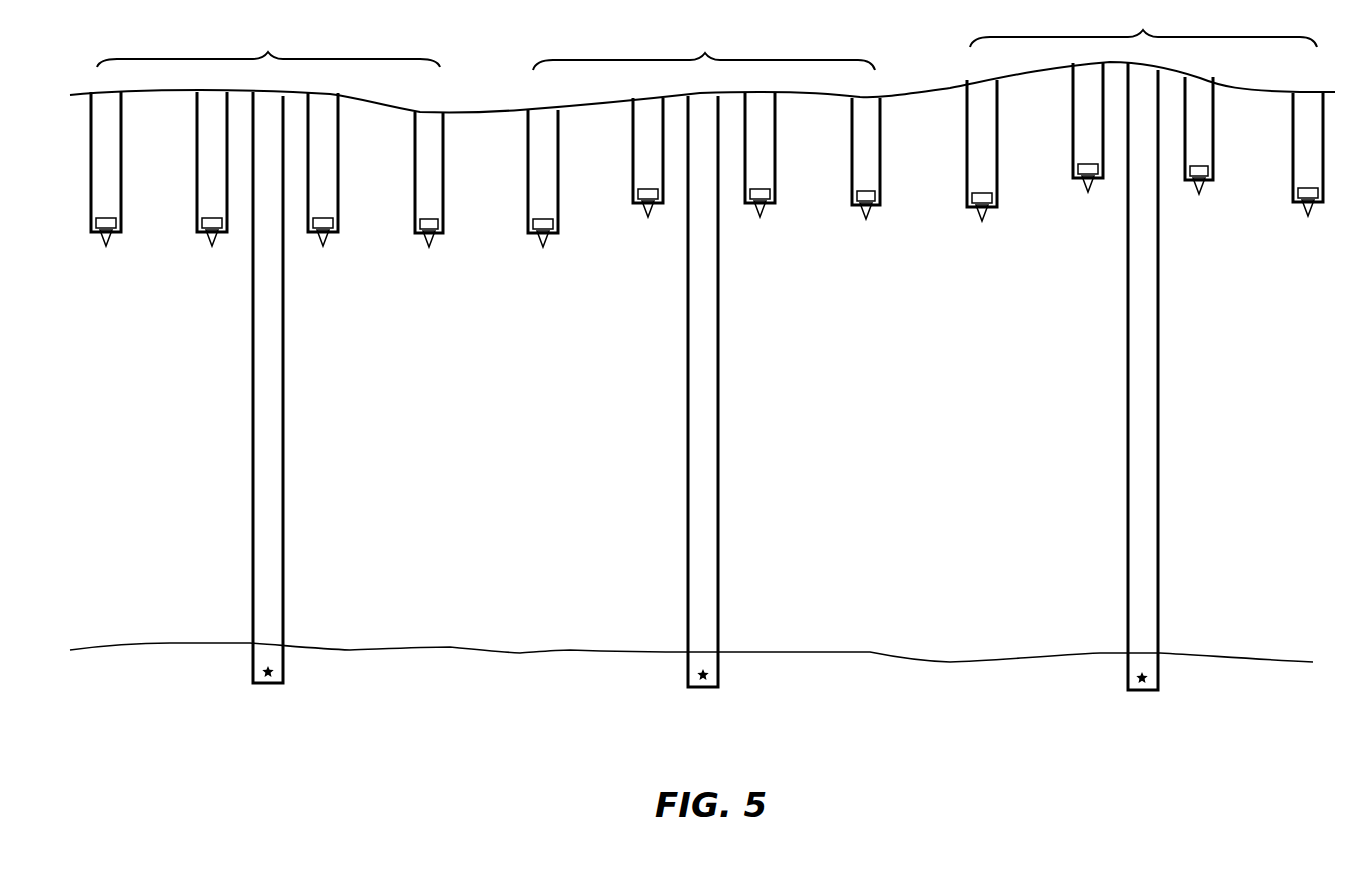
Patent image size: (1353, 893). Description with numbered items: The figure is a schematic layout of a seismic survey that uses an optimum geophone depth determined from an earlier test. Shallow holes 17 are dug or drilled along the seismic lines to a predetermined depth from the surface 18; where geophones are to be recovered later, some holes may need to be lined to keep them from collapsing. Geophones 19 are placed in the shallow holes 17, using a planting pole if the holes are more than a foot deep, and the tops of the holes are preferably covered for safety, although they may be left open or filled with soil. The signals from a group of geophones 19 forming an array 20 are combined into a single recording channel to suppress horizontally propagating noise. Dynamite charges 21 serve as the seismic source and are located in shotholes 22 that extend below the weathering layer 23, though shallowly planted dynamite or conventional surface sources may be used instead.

The shallow holes 17 is at (689, 148).
The surface 18 is at (702, 81).
The geophones 19 is at (707, 205).
The array 20 is at (707, 37).
The dynamite charges 21 is at (727, 675).
The shotholes 22 is at (724, 376).
The weathering layer 23 is at (691, 646).